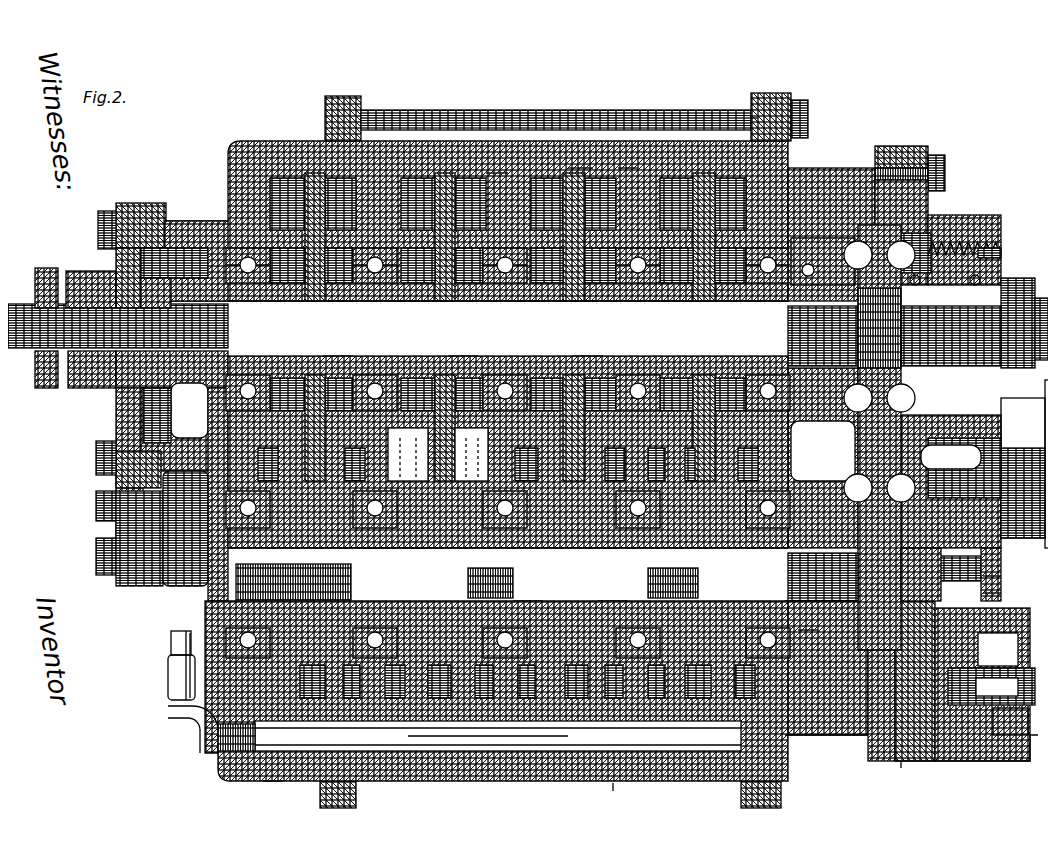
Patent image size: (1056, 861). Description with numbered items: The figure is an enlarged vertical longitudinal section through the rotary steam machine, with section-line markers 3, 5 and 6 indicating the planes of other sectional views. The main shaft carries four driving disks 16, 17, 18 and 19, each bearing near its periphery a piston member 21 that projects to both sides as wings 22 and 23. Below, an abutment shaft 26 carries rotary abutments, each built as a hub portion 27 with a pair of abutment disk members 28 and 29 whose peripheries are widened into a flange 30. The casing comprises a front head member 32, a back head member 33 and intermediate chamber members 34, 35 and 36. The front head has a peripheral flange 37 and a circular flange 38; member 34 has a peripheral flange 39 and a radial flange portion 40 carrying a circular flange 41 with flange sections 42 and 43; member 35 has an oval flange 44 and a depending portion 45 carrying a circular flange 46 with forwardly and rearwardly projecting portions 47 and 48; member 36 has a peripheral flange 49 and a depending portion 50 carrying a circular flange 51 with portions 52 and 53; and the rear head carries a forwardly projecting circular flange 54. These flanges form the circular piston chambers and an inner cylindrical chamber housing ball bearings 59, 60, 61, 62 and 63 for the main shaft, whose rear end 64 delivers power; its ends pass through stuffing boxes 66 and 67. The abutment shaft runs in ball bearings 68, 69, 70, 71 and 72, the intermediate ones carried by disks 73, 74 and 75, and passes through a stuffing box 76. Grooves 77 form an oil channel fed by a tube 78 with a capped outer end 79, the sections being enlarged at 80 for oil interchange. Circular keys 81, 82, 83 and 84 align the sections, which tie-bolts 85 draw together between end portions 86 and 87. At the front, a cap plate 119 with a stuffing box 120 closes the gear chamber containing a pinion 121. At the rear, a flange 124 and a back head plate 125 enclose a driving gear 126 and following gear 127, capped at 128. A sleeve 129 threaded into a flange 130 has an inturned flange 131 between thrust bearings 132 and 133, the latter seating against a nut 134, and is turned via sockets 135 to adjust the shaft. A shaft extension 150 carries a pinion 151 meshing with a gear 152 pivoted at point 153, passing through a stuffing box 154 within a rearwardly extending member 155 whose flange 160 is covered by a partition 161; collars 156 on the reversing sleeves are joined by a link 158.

The section line 3- 3 is at (609, 451).
The input shaft / section line 5- 5 is at (884, 774).
The section line 6- 6 is at (899, 449).
The driving disk 16 is at (285, 195).
The driving disk 17 is at (438, 175).
The driving disk 18 is at (548, 190).
The driving disk 19 is at (700, 185).
The piston member 21 is at (362, 505).
The wing 22 is at (397, 476).
The wing 23 is at (462, 476).
The abutment shaft 26 is at (205, 606).
The hub portion 27 is at (702, 530).
The abutment disk member 28 is at (542, 522).
The abutment disk member 29 is at (592, 522).
The flange 30 is at (675, 708).
The front head member 32 is at (238, 145).
The back head member 33 is at (816, 165).
The intermediate chamber member 34 is at (400, 165).
The intermediate chamber member 35 is at (516, 102).
The intermediate chamber member 36 is at (648, 175).
The peripheral flange 37 is at (298, 760).
The circular flange 38 is at (272, 255).
The peripheral flange portion 39 is at (446, 762).
The radial flange portion 40 is at (372, 180).
The circular flange 41 is at (337, 345).
The flange section 42 is at (328, 282).
The flange section 43 is at (396, 292).
The flange 44 is at (522, 762).
The downwardly depending portion 45 is at (532, 185).
The circular flange 46 is at (463, 344).
The forwardly projecting portion 47 is at (420, 282).
The rearwardly projecting portion 48 is at (520, 278).
The peripheral flange 49 is at (674, 175).
The downwardly depending portion 50 is at (630, 160).
The circular flange 51 is at (588, 344).
The forwardly projecting portion 52 is at (574, 282).
The rearwardly projecting portion 53 is at (658, 290).
The circular flange 54 is at (802, 192).
The ball bearing 59 is at (240, 278).
The ball bearing 60 is at (368, 278).
The ball bearing 61 is at (494, 278).
The ball bearing 62 is at (628, 278).
The ball bearing 63 is at (752, 278).
The rear end 64 is at (1040, 292).
The stuffing box 66 is at (160, 250).
The stuffing box 67 is at (806, 238).
The ball bearing 68 is at (190, 556).
The ball bearing 69 is at (330, 500).
The ball bearing 70 is at (490, 505).
The ball bearing 71 is at (634, 522).
The ball bearing 72 is at (775, 522).
The disk 73 is at (404, 522).
The disk 74 is at (528, 576).
The disk 75 is at (608, 576).
The stuffing box 76 is at (798, 622).
The notches or grooves 77 is at (428, 745).
The tube 78 is at (165, 712).
The outer end 79 is at (160, 630).
The enlarged lower portion 80 is at (263, 760).
The circular key 81 is at (357, 765).
The circular key 82 is at (470, 762).
The circular key 83 is at (630, 762).
The circular key 84 is at (723, 762).
The tie-bolt 85 is at (745, 110).
The projecting end portion 86 is at (312, 790).
The projecting end portion 87 is at (790, 776).
The cap plate 119 is at (108, 412).
The stuffing box 120 is at (38, 262).
The pinion 121 is at (95, 265).
The rearwardly projecting flange 124 is at (797, 735).
The back head plate 125 is at (908, 745).
The driving gear 126 is at (936, 165).
The following gear 127 is at (846, 726).
The cap 128 is at (900, 592).
The sleeve 129 is at (950, 233).
The flange 130 is at (962, 210).
The inturned flange 131 is at (966, 215).
The front thrust ball-bearing 132 is at (907, 278).
The rear thrust ball-bearing 133 is at (967, 278).
The nut 134 is at (1020, 323).
The socket 135 is at (986, 242).
The extension 150 is at (991, 686).
The pinion 151 is at (948, 770).
The gear 152 is at (985, 604).
The point 153 is at (920, 560).
The stuffing box 154 is at (1000, 727).
The rearwardly extending member 155 is at (985, 753).
The collar 156 is at (1024, 464).
The link 158 is at (985, 572).
The flange portion 160 is at (975, 450).
The partition 161 is at (985, 588).